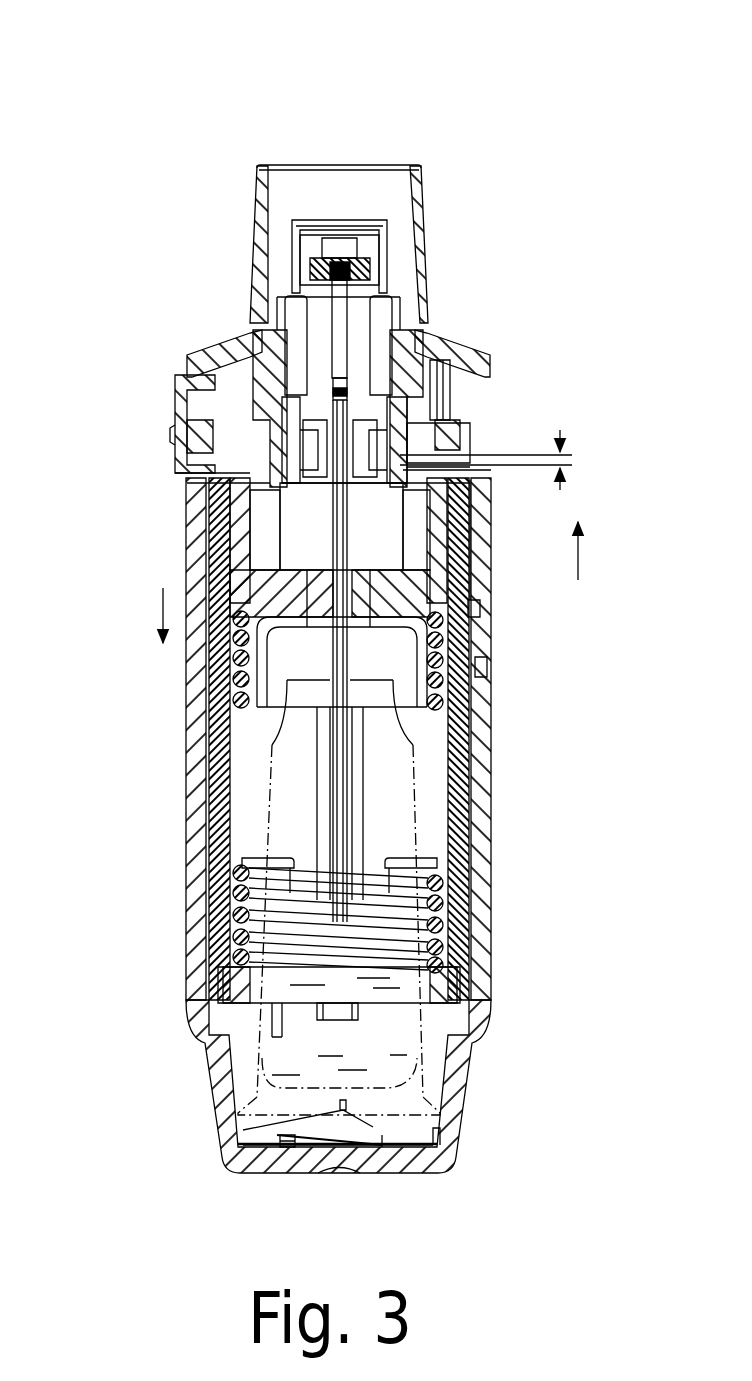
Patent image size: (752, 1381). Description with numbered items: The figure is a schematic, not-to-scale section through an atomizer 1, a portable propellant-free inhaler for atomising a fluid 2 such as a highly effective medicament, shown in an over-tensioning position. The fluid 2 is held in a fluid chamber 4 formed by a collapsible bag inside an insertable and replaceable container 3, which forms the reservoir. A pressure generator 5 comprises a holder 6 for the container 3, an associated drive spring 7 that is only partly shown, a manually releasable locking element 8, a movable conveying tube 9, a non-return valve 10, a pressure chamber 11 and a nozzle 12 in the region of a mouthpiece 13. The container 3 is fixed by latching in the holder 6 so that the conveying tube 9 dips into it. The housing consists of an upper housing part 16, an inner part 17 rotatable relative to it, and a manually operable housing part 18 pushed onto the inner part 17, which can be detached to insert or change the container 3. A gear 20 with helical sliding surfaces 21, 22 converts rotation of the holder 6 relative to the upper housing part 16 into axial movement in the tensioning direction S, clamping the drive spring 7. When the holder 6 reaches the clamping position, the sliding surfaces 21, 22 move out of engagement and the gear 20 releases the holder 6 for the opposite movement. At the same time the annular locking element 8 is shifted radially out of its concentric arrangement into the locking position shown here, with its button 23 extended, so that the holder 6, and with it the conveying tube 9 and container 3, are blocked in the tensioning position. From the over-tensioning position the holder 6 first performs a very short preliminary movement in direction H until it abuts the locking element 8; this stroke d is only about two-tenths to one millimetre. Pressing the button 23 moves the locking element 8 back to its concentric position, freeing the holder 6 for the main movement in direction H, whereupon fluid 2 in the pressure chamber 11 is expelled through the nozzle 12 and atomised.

The atomizer 1 is at (527, 173).
The fluid 2 is at (387, 772).
The container 3 is at (432, 817).
The fluid chamber 4 is at (447, 868).
The pressure generator 5 is at (405, 392).
The holder 6 is at (430, 567).
The drive spring 7 is at (485, 653).
The locking element 8 is at (445, 440).
The conveying tube 9 is at (345, 520).
The non-return valve 10 is at (354, 399).
The pressure chamber 11 is at (338, 305).
The nozzle 12 is at (337, 220).
The mouthpiece 13 is at (258, 246).
The upper housing part 16 is at (285, 488).
The inner part 17 is at (223, 738).
The housing part 18 is at (193, 887).
The gear 20 is at (256, 487).
The sliding surface 21 is at (450, 378).
The sliding surface 22 is at (297, 495).
The button 23 is at (177, 410).
The stroke d is at (560, 455).
The main movement direction H is at (578, 552).
The tensioning direction S is at (163, 610).